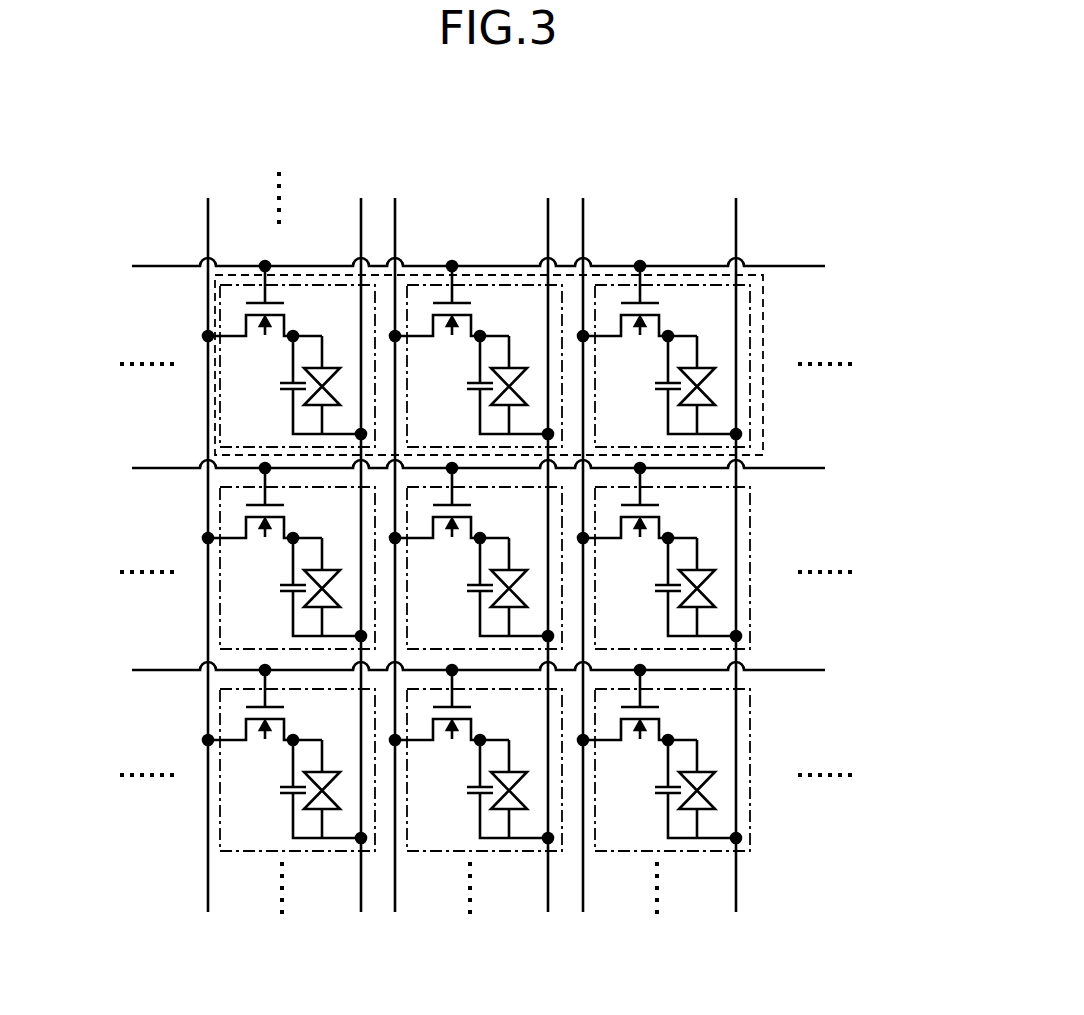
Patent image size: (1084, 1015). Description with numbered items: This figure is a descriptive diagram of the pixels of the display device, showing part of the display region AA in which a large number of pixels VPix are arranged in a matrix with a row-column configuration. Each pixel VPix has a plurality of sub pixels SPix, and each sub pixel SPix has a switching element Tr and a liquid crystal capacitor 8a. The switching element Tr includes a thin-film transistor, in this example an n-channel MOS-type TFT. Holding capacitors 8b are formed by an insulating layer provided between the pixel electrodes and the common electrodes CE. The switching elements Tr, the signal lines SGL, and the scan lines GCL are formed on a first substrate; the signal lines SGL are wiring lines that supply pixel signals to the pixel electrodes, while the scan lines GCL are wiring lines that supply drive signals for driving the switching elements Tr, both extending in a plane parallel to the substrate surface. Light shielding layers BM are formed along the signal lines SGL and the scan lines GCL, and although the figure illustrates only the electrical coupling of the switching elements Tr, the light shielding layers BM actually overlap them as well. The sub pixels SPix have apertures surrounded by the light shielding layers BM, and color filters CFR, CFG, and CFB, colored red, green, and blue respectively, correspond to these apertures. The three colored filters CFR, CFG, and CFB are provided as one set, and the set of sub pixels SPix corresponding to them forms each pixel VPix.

The display region AA is at (736, 175).
The scan line GCL is at (177, 266).
The signal line SGL is at (208, 218).
The common electrode CE is at (361, 886).
The pixel VPix is at (763, 421).
The sub pixel SPix is at (326, 280).
The light shielding layer BM is at (377, 284).
The red color filter CFR is at (243, 412).
The green color filter CFG is at (471, 292).
The blue color filter CFB is at (659, 292).
The switching element Tr is at (640, 334).
The liquid crystal capacitor 8a is at (643, 410).
The holding capacitor 8b is at (464, 410).